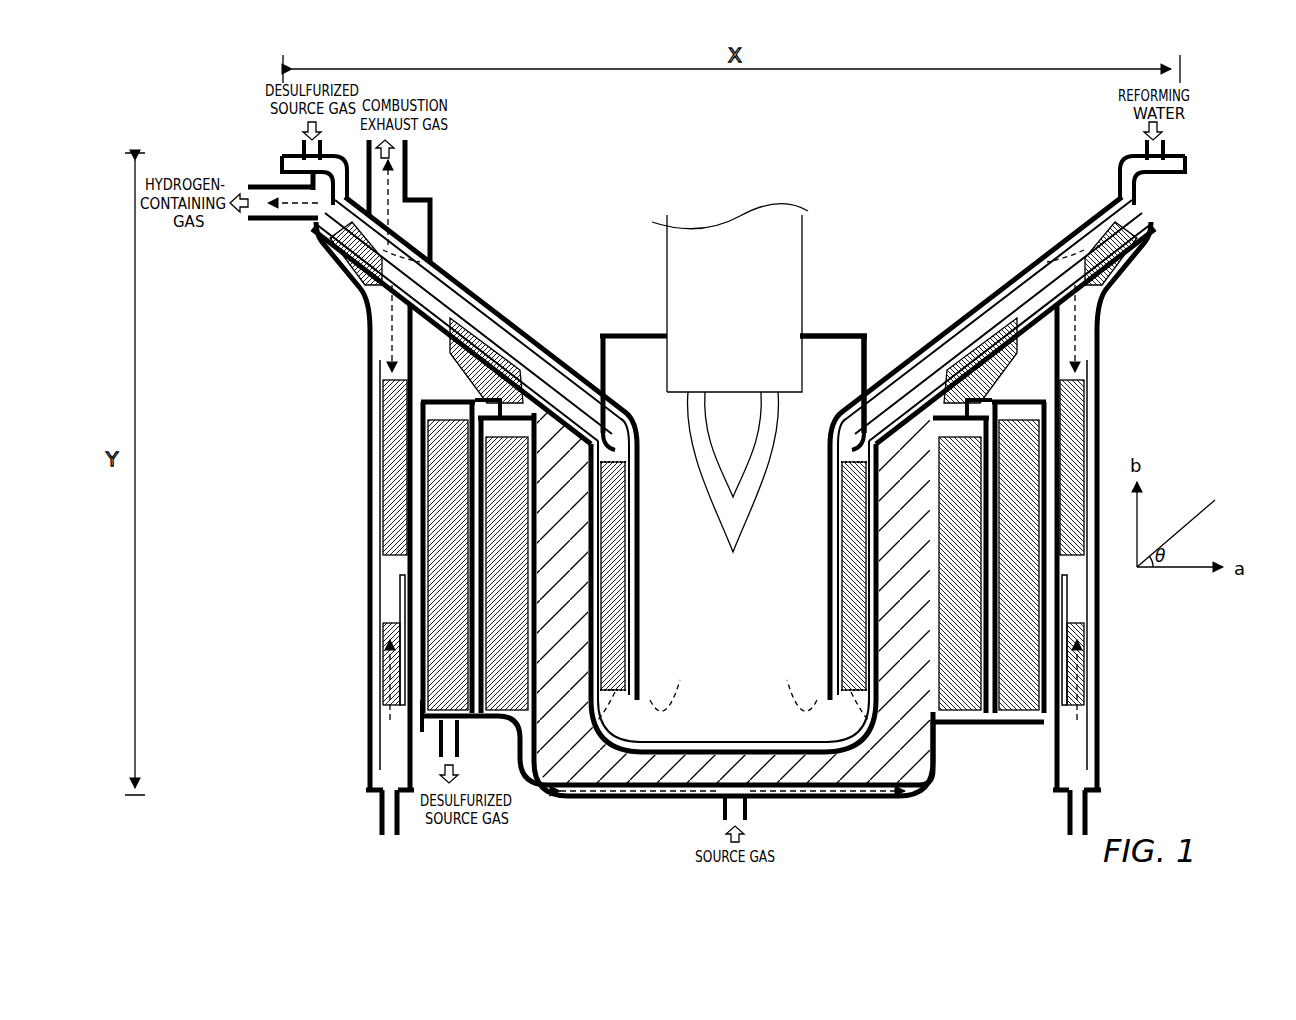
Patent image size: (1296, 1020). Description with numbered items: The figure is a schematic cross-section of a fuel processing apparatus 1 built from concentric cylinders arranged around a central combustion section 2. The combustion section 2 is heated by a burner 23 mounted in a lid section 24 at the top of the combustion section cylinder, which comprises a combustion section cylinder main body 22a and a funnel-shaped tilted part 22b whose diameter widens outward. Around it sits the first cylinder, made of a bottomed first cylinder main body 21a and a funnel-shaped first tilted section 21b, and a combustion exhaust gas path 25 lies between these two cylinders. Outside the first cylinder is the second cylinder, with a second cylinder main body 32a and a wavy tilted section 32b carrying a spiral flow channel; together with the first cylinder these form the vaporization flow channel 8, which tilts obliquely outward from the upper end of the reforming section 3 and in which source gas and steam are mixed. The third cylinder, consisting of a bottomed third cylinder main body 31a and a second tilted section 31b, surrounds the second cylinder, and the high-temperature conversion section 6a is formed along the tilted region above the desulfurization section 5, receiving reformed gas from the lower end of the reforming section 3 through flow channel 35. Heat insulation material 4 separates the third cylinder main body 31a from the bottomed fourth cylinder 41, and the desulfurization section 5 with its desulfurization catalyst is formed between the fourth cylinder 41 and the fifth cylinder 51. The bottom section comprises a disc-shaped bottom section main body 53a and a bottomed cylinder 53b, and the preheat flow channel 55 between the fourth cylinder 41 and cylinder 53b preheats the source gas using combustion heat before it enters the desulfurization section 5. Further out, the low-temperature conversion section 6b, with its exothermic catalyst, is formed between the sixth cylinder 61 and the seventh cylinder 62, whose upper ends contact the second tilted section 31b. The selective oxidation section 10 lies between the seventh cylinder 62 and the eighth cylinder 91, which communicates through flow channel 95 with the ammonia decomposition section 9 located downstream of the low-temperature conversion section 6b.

The fuel processing apparatus 1 is at (1219, 192).
The combustion section 2 is at (650, 335).
The reforming section 3 is at (625, 580).
The heat insulation material 4 is at (790, 776).
The desulfurization section 5 is at (470, 715).
The high-temperature conversion section 6a is at (514, 343).
The low-temperature conversion section 6b is at (379, 513).
The vaporization flow channel 8 is at (426, 270).
The ammonia decomposition section 9 is at (386, 640).
The selective oxidation section 10 is at (348, 262).
The first cylinder main body 21a is at (710, 750).
The first tilted section 21b is at (482, 304).
The combustion section cylinder main body 22a is at (641, 540).
The funnel-shaped tilted part 22b is at (458, 284).
The burner 23 is at (796, 240).
The lid section 24 is at (838, 334).
The combustion exhaust gas path 25 is at (607, 412).
The third cylinder main body 31a is at (747, 741).
The second tilted section 31b is at (567, 400).
The second cylinder main body 32a is at (602, 600).
The wavy tilted section 32b is at (540, 350).
The flow channel 35 is at (599, 628).
The fourth cylinder 41 is at (882, 800).
The fifth cylinder 51 is at (424, 735).
The bottom section main body 53a is at (1006, 726).
The bottomed cylinder 53b is at (645, 798).
The preheat flow channel 55 is at (540, 796).
The sixth cylinder 61 is at (374, 432).
The seventh cylinder 62 is at (374, 465).
The eighth cylinder 91 is at (371, 578).
The flow channel 95 is at (375, 600).